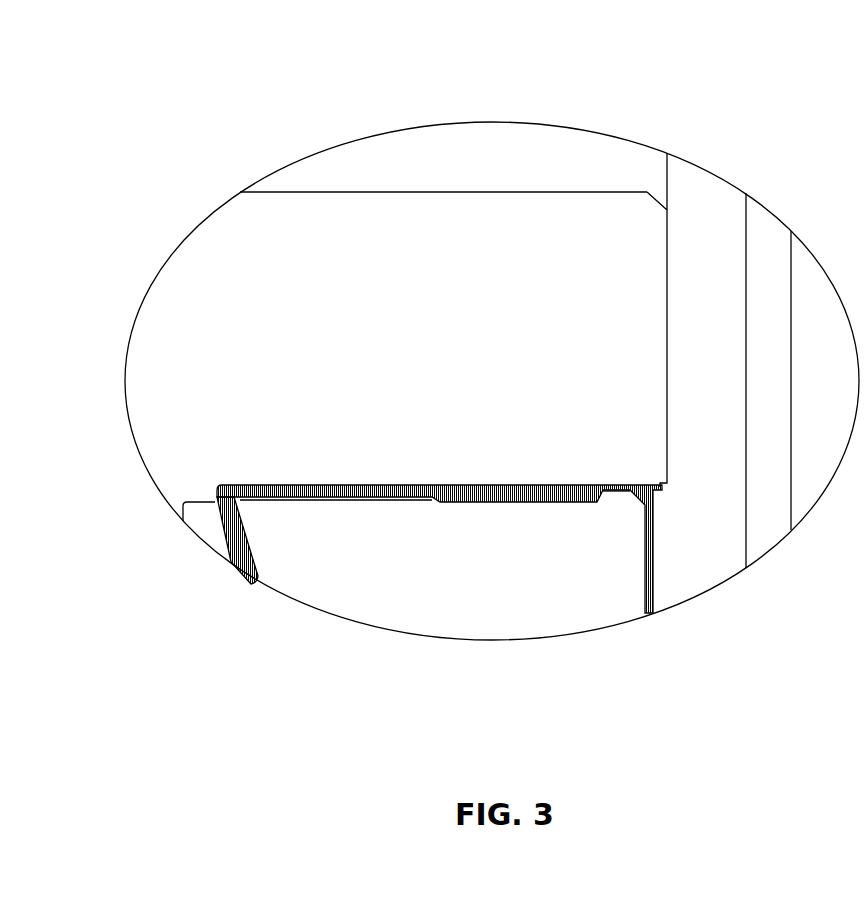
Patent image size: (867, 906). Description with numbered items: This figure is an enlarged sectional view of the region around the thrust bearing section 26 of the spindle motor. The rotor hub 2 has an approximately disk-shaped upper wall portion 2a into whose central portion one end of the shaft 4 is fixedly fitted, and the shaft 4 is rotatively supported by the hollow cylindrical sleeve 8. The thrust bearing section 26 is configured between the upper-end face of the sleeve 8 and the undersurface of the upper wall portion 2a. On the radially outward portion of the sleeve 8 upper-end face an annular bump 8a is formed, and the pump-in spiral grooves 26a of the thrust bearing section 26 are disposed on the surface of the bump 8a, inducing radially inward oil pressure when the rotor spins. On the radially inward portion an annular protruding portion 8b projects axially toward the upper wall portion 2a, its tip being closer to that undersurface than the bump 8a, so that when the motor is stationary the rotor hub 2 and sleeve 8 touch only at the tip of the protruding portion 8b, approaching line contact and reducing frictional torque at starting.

The rotor hub 2 is at (538, 192).
The upper wall portion 2a is at (352, 270).
The shaft 4 is at (707, 238).
The thrust bearing section 26 is at (302, 486).
The spiral grooves 26a is at (300, 500).
The sleeve 8 is at (420, 587).
The annular bump 8a is at (390, 498).
The annular protruding portion 8b is at (613, 491).